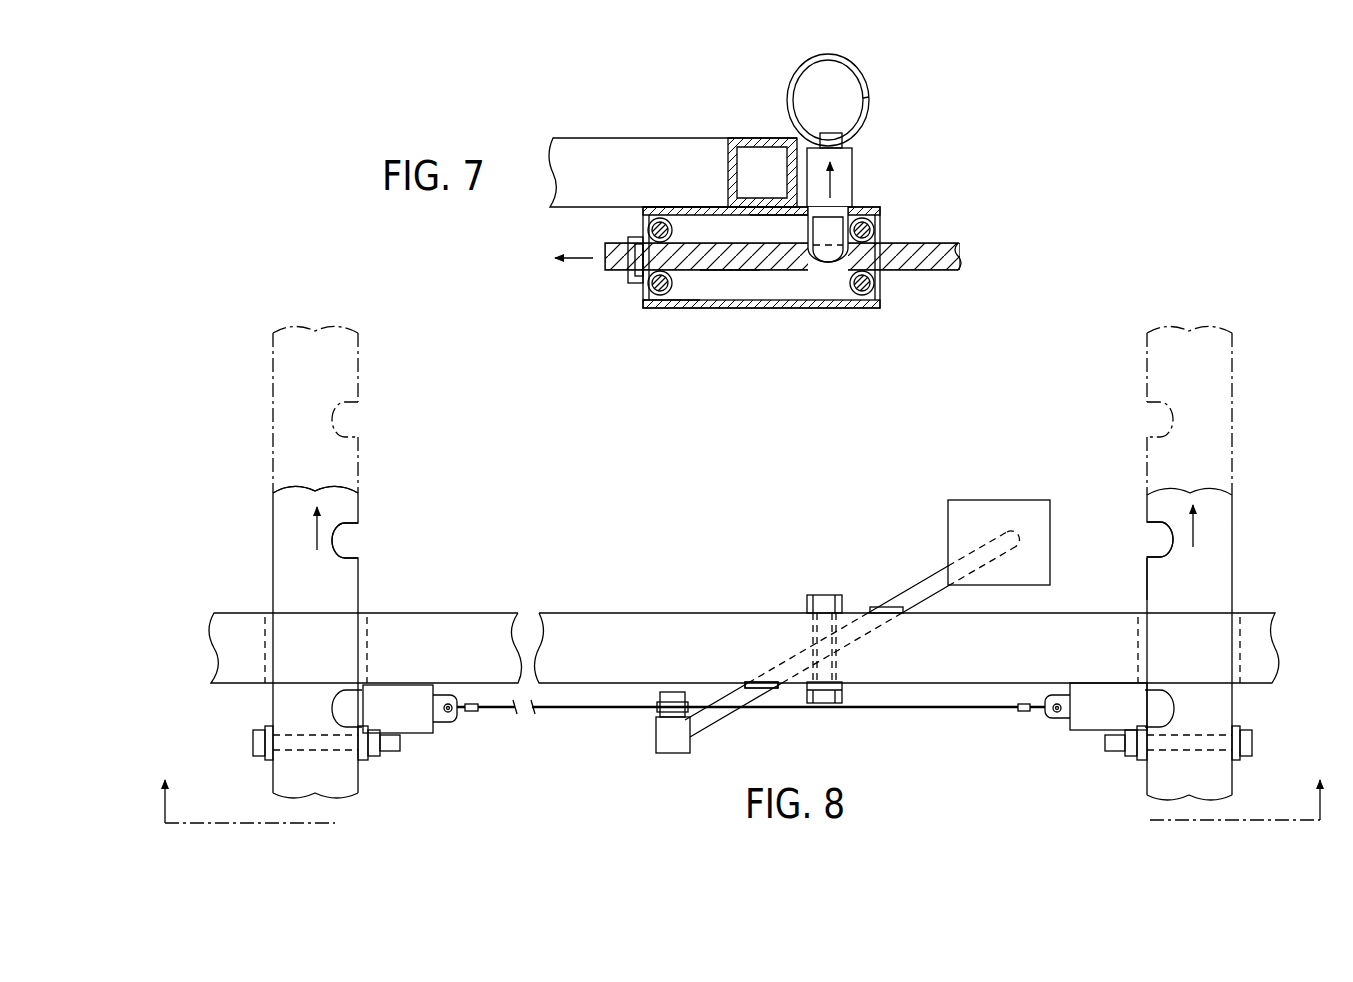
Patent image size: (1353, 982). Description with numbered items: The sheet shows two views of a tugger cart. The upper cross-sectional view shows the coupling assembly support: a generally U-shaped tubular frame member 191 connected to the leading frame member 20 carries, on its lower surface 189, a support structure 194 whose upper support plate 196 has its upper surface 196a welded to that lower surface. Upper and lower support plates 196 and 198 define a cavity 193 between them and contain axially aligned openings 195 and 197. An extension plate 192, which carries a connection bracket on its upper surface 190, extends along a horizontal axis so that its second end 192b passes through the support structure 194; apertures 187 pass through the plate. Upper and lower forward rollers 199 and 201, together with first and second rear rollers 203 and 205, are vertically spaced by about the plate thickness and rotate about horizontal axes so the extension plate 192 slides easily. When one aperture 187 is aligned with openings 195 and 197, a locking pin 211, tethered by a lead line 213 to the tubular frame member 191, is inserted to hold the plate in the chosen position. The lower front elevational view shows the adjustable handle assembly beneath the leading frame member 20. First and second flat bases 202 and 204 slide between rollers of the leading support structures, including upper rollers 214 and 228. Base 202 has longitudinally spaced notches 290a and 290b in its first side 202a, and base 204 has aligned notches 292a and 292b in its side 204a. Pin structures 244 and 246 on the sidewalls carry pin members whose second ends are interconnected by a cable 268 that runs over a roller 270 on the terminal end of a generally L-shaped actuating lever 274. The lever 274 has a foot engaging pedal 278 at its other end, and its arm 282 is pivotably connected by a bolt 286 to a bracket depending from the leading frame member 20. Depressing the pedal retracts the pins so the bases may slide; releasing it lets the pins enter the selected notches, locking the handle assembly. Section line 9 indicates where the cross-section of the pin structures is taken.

In FIG. 7, the apertures 187 is at (846, 268).
In FIG. 7, the lower surface 189 is at (749, 215).
In FIG. 7, the upper surface 190 is at (903, 241).
In FIG. 7, the tubular frame member 191 is at (767, 138).
In FIG. 7, the extension plate 192 is at (935, 239).
In FIG. 7, the second end 192b is at (725, 278).
In FIG. 7, the cavity 193 is at (698, 222).
In FIG. 7, the support structure 194 is at (650, 314).
In FIG. 7, the opening 195 is at (848, 200).
In FIG. 7, the upper support plate 196 is at (651, 201).
In FIG. 7, the upper surface 196a is at (673, 207).
In FIG. 7, the opening 197 is at (808, 306).
In FIG. 7, the lower support plate 198 is at (695, 314).
In FIG. 7, the upper forward roller 199 is at (874, 237).
In FIG. 7, the lower forward roller 201 is at (868, 290).
In FIG. 7, the first rear roller 203 is at (646, 232).
In FIG. 7, the second rear roller 205 is at (646, 289).
In FIG. 7, the locking pin 211 is at (868, 85).
In FIG. 7, the lead line 213 is at (790, 88).
In FIG. 8, the leading frame member 20 is at (645, 613).
In FIG. 8, the first base 202 is at (273, 555).
In FIG. 8, the first side 202a is at (358, 511).
In FIG. 8, the second base 204 is at (1232, 555).
In FIG. 8, the side 204a is at (1145, 582).
In FIG. 8, the upper roller 214 is at (333, 757).
In FIG. 8, the upper roller 228 is at (1170, 757).
In FIG. 8, the pin structure 244 is at (430, 733).
In FIG. 8, the pin structure 246 is at (1073, 735).
In FIG. 8, the cable 268 is at (572, 712).
In FIG. 8, the roller 270 is at (655, 720).
In FIG. 8, the actuating lever 274 is at (778, 656).
In FIG. 8, the foot engaging pedal 278 is at (997, 495).
In FIG. 8, the second arm 282 is at (915, 590).
In FIG. 8, the bolt 286 is at (808, 597).
In FIG. 8, the notch 290a is at (350, 437).
In FIG. 8, the notch 290b is at (343, 556).
In FIG. 8, the notch 292a is at (1148, 437).
In FIG. 8, the notch 292b is at (1148, 538).
In FIG. 8, the section line 9 is at (740, 786).